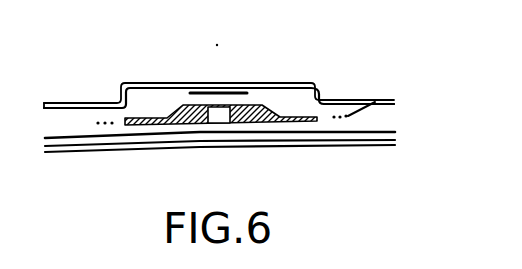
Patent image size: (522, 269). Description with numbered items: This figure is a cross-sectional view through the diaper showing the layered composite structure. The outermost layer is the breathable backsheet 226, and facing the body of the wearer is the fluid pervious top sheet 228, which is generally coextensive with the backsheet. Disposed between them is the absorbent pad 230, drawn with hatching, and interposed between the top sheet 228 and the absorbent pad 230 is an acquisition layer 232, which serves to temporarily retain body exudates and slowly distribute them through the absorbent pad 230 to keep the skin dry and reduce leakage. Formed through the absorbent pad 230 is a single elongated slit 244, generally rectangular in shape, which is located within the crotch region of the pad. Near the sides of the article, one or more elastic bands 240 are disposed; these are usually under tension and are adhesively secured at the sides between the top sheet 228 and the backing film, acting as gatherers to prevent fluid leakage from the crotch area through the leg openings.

The breathable backsheet 226 is at (378, 131).
The top sheet 228 is at (193, 82).
The absorbent pad 230 is at (293, 112).
The acquisition layer 232 is at (238, 91).
The elastic bands 240 is at (394, 98).
The slit 244 is at (220, 114).